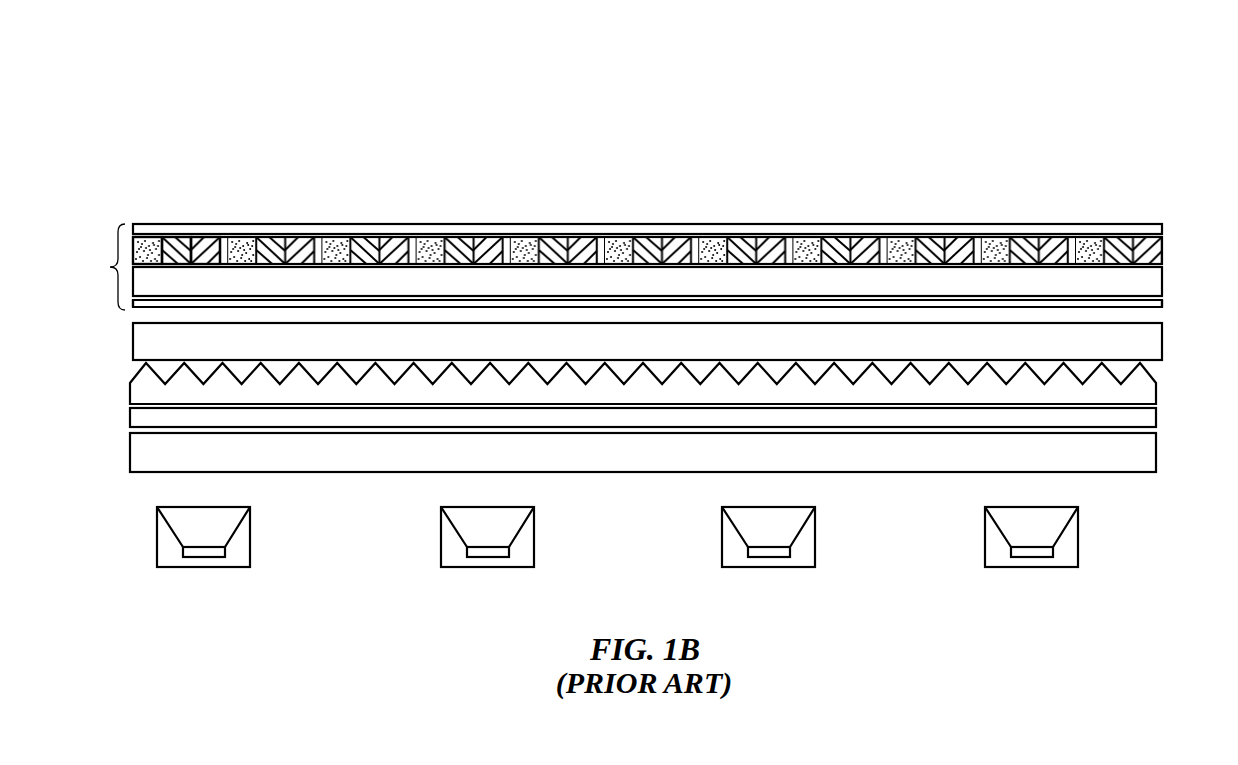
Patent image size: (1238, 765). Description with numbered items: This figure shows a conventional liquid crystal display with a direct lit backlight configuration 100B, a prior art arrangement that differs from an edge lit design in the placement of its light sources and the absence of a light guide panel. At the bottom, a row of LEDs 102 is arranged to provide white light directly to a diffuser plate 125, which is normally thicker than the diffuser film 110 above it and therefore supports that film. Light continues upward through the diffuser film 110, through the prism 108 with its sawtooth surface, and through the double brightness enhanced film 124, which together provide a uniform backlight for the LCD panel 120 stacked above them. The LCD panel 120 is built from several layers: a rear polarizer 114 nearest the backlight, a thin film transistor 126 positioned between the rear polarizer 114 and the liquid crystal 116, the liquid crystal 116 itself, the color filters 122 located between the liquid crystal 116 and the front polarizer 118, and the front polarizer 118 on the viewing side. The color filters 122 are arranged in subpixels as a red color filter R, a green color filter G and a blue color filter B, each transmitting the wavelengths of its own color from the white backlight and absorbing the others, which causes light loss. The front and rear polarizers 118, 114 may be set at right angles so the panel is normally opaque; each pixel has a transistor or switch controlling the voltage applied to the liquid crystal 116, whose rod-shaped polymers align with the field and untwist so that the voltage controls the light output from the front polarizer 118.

The direct lit backlight configuration 100B is at (1082, 98).
The front polarizer 118 is at (1162, 228).
The color filters 122 is at (1162, 241).
The red color filter R is at (152, 237).
The green color filter G is at (180, 237).
The blue color filter B is at (212, 237).
The liquid crystal 116 is at (1162, 267).
The thin film transistor 126 is at (1162, 288).
The rear polarizer 114 is at (1162, 307).
The LCD panel 120 is at (101, 267).
The double brightness enhanced film 124 is at (1162, 340).
The prism 108 is at (1156, 388).
The diffuser film 110 is at (1156, 418).
The diffuser plate 125 is at (1156, 452).
The LEDs 102 is at (985, 542).